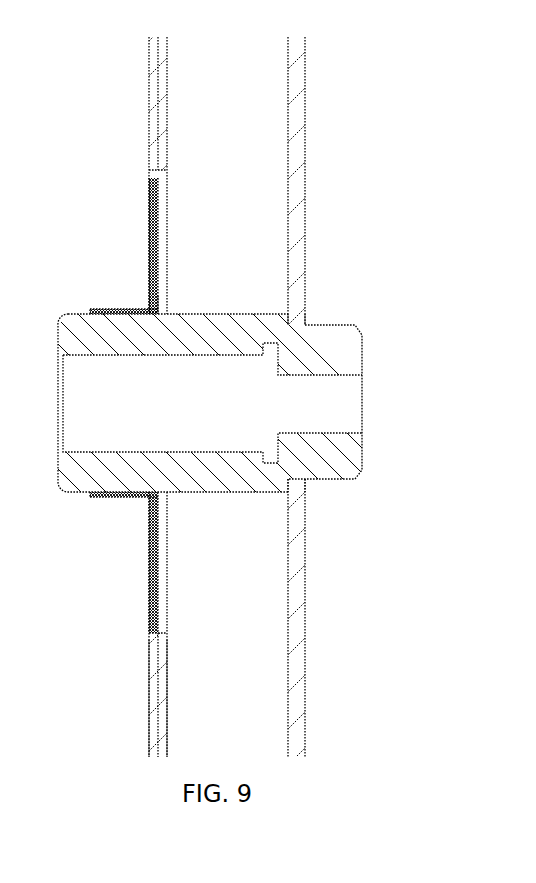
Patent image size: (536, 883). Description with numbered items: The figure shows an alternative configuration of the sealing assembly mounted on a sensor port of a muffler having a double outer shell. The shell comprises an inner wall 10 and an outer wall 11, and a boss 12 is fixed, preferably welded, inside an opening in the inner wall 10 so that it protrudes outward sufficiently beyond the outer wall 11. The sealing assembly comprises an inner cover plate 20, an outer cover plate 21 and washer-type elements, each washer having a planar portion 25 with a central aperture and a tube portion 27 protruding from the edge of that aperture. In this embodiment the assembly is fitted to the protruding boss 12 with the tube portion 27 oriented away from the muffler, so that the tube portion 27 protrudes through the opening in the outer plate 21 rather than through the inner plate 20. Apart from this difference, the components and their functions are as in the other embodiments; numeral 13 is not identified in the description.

The inner wall 10 is at (298, 218).
The outer wall 11 is at (160, 713).
The boss 12 is at (352, 347).
The inner tube portion 13 is at (160, 195).
The inner cover plate 20 is at (156, 625).
The outer cover plate 21 is at (150, 117).
The planar portion 25 is at (150, 300).
The tube portion 27 is at (112, 495).